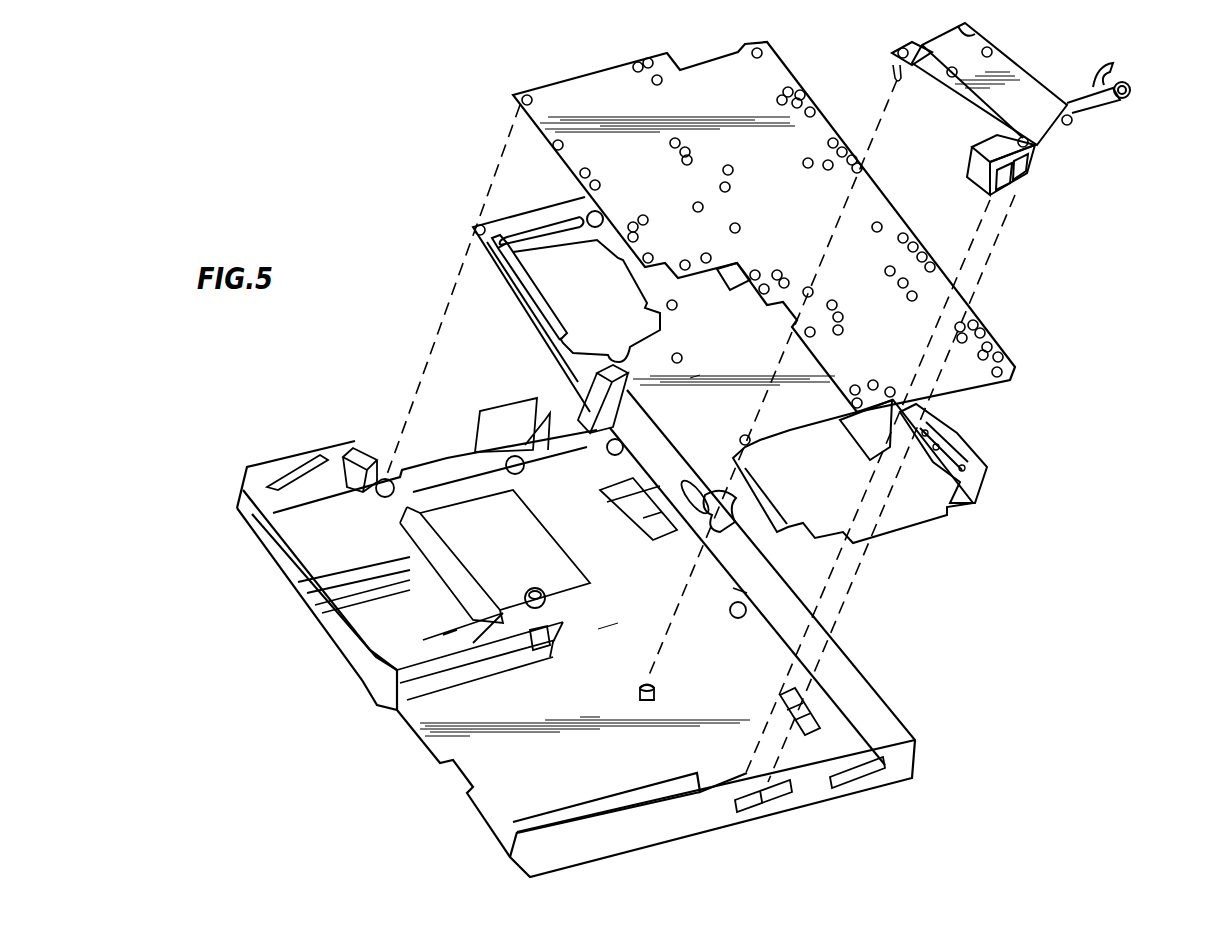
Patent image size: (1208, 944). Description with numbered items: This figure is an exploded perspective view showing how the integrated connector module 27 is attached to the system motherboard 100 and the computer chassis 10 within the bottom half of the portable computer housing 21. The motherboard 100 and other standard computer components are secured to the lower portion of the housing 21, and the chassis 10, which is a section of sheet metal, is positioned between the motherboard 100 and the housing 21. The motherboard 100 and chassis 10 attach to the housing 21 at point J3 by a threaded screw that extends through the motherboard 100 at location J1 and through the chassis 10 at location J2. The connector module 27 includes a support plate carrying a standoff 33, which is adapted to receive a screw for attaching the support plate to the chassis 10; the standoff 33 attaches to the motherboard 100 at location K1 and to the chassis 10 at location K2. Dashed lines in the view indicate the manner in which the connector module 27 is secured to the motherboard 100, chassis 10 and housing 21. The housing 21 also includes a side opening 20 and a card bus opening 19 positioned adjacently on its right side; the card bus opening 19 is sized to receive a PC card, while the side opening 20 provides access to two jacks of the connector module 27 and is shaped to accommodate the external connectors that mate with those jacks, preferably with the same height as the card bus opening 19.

The motherboard 100 is at (978, 393).
The chassis 10 is at (917, 532).
The integrated connector module 27 is at (1068, 54).
The standoff 33 is at (895, 70).
The portable computer housing 21 is at (898, 785).
The card bus opening 19 is at (835, 780).
The side opening 20 is at (771, 818).
The motherboard screw location J1 is at (522, 94).
The chassis screw location J2 is at (477, 226).
The housing attachment point J3 is at (385, 479).
The standoff attachment location on motherboard K1 is at (808, 288).
The standoff attachment location on chassis K2 is at (752, 440).